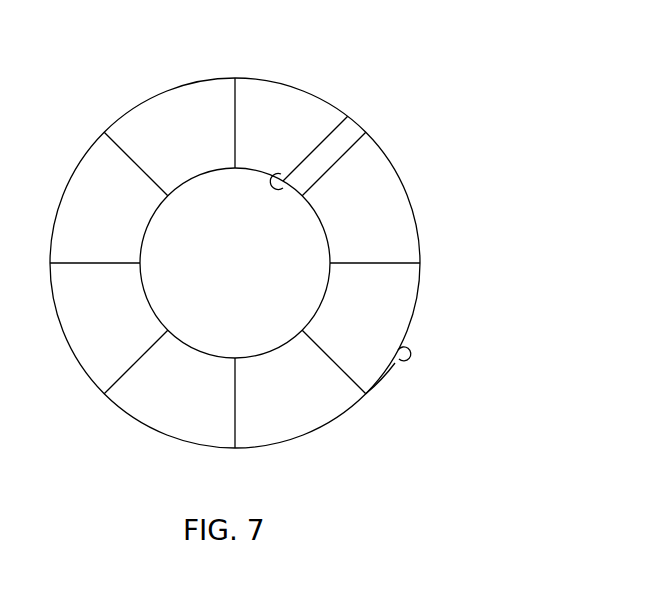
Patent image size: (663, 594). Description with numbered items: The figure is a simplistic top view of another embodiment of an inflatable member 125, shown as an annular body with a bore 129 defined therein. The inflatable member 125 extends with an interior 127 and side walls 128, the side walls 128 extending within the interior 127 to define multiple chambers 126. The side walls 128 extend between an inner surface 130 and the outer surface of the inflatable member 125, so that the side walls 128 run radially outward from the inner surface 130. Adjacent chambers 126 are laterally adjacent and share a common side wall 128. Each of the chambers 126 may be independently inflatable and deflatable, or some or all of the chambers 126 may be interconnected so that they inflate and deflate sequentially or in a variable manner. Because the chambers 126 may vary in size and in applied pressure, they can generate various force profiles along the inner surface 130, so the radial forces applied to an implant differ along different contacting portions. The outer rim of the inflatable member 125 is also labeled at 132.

The inflatable member 125 is at (408, 180).
The multiple chambers 126 is at (380, 238).
The interior 127 is at (400, 358).
The side walls 128 is at (237, 125).
The bore 129 is at (348, 116).
The inner surface 130 is at (285, 342).
The outer rim 132 is at (377, 385).